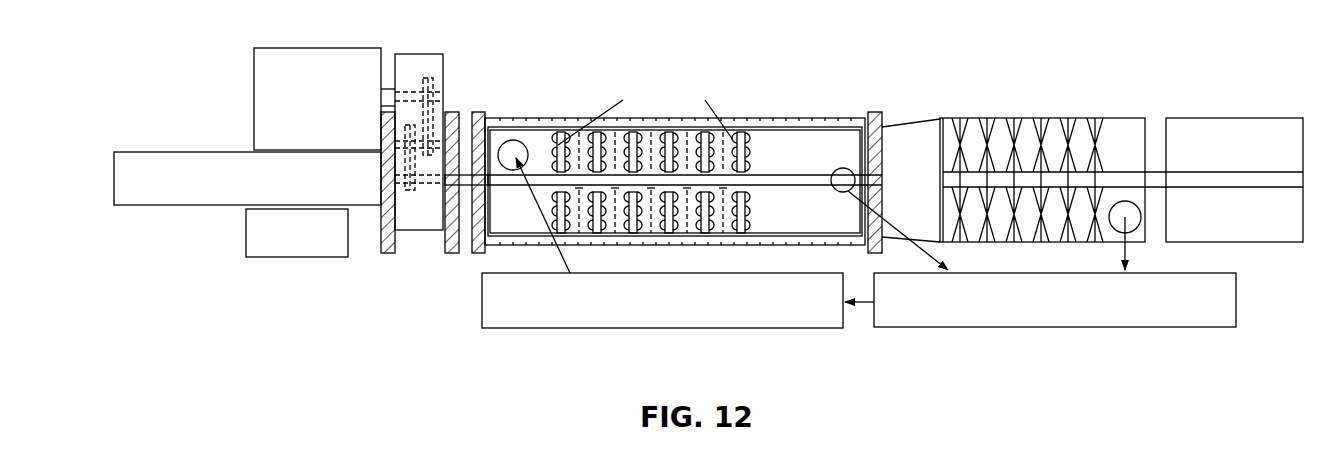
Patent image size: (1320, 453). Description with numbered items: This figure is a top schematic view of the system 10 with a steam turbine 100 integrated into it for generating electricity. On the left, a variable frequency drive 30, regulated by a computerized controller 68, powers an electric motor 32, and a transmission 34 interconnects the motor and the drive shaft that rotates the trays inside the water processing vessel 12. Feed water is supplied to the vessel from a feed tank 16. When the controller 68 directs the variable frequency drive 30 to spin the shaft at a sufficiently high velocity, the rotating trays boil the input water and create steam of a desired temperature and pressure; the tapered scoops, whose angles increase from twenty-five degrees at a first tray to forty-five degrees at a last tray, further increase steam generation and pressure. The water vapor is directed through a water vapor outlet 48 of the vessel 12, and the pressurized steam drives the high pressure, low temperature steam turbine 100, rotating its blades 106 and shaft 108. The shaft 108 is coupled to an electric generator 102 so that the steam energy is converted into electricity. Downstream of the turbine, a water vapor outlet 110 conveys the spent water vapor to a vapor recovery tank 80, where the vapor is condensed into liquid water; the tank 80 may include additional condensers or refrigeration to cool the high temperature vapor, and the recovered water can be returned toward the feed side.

The system 10 is at (568, 24).
The water processing vessel 12 is at (835, 105).
The feed tank 16 is at (662, 328).
The variable frequency drive 30 is at (247, 163).
The electric motor 32 is at (324, 82).
The transmission 34 is at (434, 133).
The water vapor outlet 48 is at (865, 275).
The controller 68 is at (283, 249).
The vapor recovery tank 80 is at (1040, 325).
The steam turbine 100 is at (997, 103).
The electric generator 102 is at (1230, 114).
The blades 106 is at (1127, 160).
The shaft 108 is at (1125, 235).
The water vapor outlet 110 is at (1186, 282).